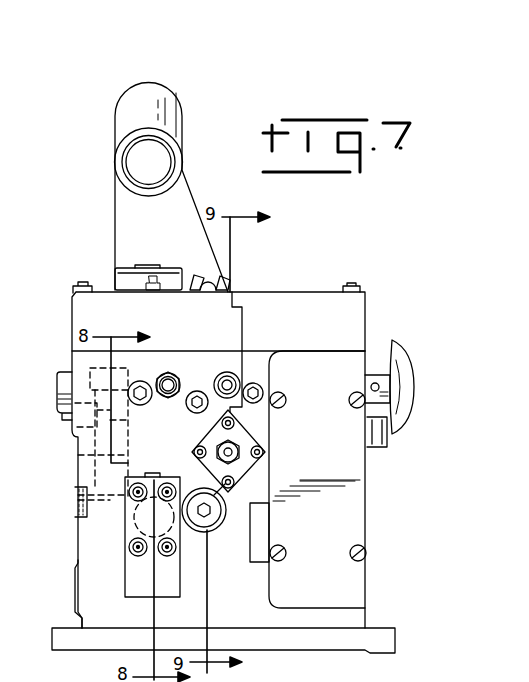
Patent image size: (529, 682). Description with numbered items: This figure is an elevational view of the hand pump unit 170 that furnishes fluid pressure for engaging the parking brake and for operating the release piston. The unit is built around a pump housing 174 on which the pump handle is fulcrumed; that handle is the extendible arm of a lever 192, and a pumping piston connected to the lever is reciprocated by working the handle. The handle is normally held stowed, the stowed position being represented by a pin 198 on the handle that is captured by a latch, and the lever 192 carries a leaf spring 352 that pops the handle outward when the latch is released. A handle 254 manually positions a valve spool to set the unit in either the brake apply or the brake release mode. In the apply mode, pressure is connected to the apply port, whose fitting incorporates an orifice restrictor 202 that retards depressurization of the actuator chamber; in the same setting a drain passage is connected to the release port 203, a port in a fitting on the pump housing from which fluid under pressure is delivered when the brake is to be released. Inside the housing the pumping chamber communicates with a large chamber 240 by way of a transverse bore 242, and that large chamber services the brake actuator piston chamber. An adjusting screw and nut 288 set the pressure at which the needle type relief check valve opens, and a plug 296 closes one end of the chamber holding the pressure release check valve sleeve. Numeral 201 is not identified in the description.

The hand pump unit 170 is at (367, 307).
The pump housing 174 is at (82, 590).
The lever 192 is at (120, 224).
The pin 198 is at (141, 270).
The bolt 201 is at (170, 378).
The orifice restrictor 202 is at (176, 383).
The release port 203 is at (239, 379).
The large chamber 240 is at (82, 454).
The transverse bore 242 is at (112, 505).
The handle 254 is at (402, 342).
The adjusting screw and nut 288 is at (218, 452).
The plug 296 is at (212, 528).
The leaf spring 352 is at (227, 271).